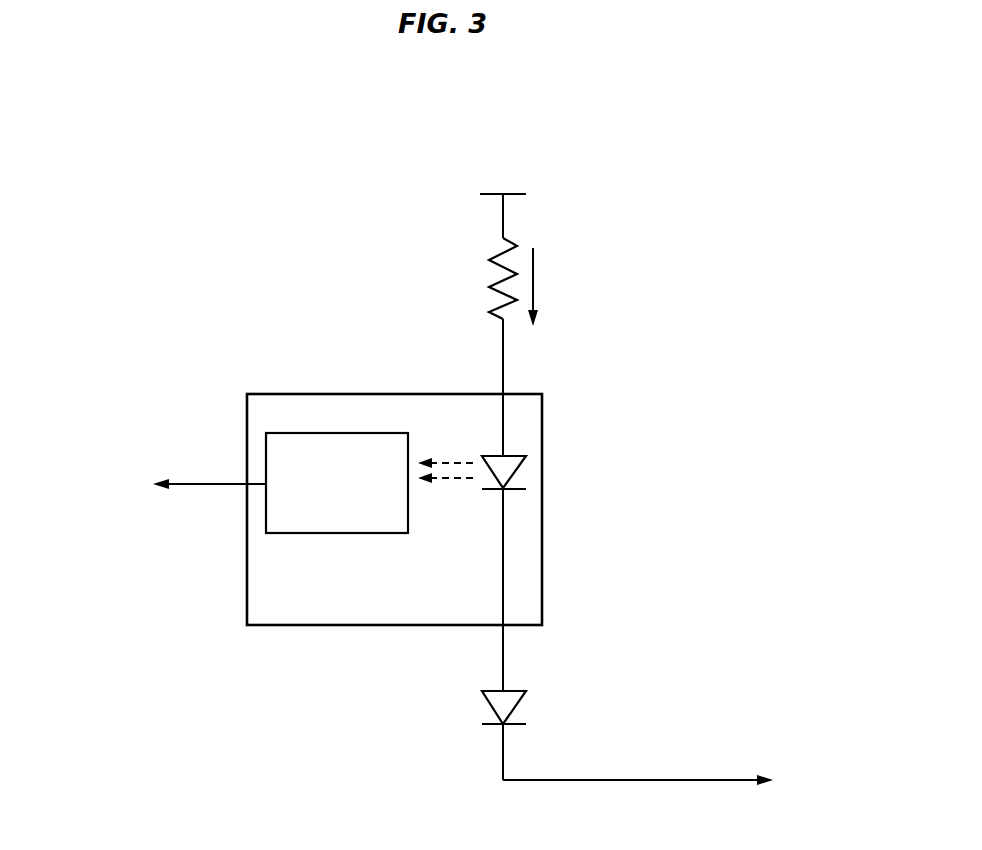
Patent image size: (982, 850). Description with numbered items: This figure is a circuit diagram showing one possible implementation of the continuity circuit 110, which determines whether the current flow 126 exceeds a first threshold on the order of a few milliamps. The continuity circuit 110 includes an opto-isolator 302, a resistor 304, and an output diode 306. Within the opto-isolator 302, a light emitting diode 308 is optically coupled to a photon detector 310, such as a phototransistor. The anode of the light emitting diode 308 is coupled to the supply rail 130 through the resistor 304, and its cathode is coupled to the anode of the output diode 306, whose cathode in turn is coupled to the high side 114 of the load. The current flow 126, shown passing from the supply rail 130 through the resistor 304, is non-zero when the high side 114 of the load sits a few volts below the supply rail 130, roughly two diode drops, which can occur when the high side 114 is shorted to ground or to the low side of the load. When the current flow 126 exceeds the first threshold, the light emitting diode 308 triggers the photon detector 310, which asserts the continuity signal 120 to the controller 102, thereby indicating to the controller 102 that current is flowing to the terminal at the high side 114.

The continuity circuit 110 is at (618, 110).
The supply rail 130 is at (503, 212).
The resistor 304 is at (493, 281).
The current flow 126 is at (535, 285).
The opto-isolator 302 is at (394, 542).
The photon detector 310 is at (369, 483).
The Light Emitting Diode 308 is at (514, 470).
The continuity signal 120 is at (203, 482).
The controller 102 is at (90, 481).
The output diode 306 is at (518, 699).
The high side of load 114 is at (683, 781).